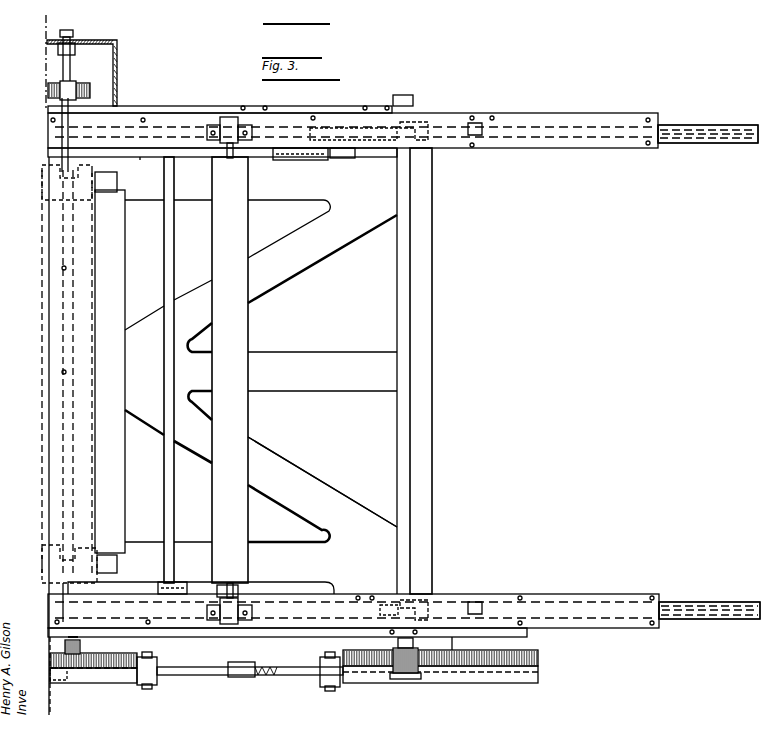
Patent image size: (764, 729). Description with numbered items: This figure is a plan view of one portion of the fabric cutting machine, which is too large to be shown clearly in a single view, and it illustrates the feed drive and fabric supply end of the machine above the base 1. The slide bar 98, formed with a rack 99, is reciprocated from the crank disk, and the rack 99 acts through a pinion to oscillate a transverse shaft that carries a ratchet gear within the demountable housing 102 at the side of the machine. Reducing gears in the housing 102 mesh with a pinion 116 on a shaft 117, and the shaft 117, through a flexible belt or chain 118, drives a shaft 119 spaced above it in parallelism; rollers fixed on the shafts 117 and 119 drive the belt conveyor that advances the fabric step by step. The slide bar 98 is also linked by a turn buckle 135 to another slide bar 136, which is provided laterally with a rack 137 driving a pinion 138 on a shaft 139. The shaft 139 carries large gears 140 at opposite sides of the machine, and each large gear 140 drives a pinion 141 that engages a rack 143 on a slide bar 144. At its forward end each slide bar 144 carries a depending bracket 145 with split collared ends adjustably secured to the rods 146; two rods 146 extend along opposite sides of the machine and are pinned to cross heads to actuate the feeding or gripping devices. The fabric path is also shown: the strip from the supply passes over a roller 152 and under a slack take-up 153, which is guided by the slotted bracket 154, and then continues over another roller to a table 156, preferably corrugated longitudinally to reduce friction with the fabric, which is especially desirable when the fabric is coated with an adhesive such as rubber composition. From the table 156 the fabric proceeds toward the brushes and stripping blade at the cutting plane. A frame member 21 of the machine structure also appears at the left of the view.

The base 1 is at (312, 480).
The frame member 21 is at (50, 506).
The slide bar 98 is at (100, 677).
The rack 99 is at (100, 655).
The demountable housing 102 is at (118, 55).
The pinion 116 is at (103, 78).
The shaft 117 is at (68, 62).
The flexible belt or chain 118 is at (42, 575).
The shaft 119 is at (72, 656).
The turn buckle 135 is at (213, 675).
The slide bar 136 is at (482, 678).
The rack 137 is at (538, 658).
The pinion 138 is at (390, 672).
The shaft 139 is at (408, 677).
The large gear 140 is at (493, 113).
The pinion 141 is at (437, 123).
The rack 143 is at (692, 138).
The slide bar 144 is at (713, 107).
The depending bracket 145 is at (303, 155).
The rod 146 is at (350, 158).
The roller 152 is at (240, 328).
The slack take-up 153 is at (172, 231).
The slotted bracket 154 is at (141, 160).
The table 156 is at (80, 323).